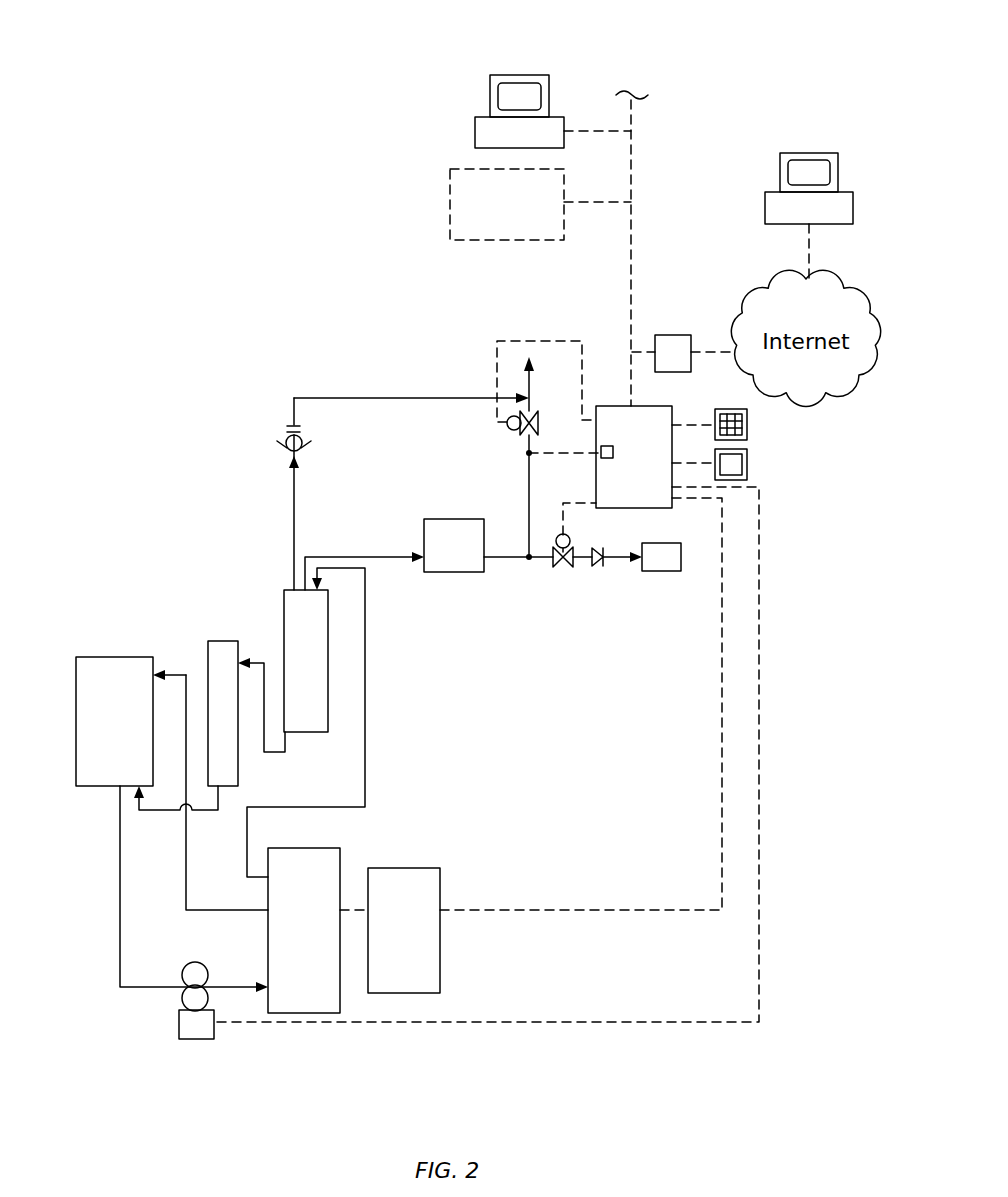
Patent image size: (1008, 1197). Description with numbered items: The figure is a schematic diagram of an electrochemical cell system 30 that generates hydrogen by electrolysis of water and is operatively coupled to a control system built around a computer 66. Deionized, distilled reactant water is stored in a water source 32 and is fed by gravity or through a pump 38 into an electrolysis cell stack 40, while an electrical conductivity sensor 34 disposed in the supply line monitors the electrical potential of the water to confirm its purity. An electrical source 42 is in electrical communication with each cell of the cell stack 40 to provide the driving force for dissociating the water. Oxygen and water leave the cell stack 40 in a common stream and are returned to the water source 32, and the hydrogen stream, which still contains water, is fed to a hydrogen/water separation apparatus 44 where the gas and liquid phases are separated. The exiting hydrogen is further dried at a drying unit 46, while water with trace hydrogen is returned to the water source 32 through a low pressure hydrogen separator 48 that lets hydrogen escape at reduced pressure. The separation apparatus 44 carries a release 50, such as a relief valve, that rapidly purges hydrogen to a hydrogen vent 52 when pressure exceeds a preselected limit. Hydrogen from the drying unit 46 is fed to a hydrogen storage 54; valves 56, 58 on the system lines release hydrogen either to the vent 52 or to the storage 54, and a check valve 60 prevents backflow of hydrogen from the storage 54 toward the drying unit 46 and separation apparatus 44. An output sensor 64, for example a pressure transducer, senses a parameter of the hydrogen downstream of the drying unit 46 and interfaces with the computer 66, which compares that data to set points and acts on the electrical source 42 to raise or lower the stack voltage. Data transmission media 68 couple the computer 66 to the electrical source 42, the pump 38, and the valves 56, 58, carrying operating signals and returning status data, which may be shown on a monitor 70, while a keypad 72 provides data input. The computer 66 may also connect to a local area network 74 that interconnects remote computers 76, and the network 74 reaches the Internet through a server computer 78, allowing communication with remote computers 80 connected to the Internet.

The electrochemical cell system 30 is at (460, 195).
The water source 32 is at (118, 655).
The electrical conductivity sensor 34 is at (112, 900).
The pump 38 is at (182, 998).
The electrolysis cell stack 40 is at (320, 1015).
The electrical source 42 is at (443, 945).
The hydrogen/water separation apparatus 44 is at (340, 671).
The drying unit 46 is at (460, 574).
The low pressure hydrogen separator 48 is at (225, 640).
The release 50 is at (287, 447).
The hydrogen vent 52 is at (525, 370).
The hydrogen storage 54 is at (660, 573).
The valve 56 is at (565, 569).
The valve 58 is at (533, 412).
The check valve 60 is at (598, 568).
The output sensor 64 is at (598, 457).
The computer 66 is at (650, 491).
The data transmission media 68 is at (542, 341).
The monitor 70 is at (747, 470).
The keypad 72 is at (747, 422).
The local area network 74 is at (641, 282).
The remote computer 76 is at (530, 72).
The server computer 78 is at (680, 345).
The remote computer 80 is at (813, 150).